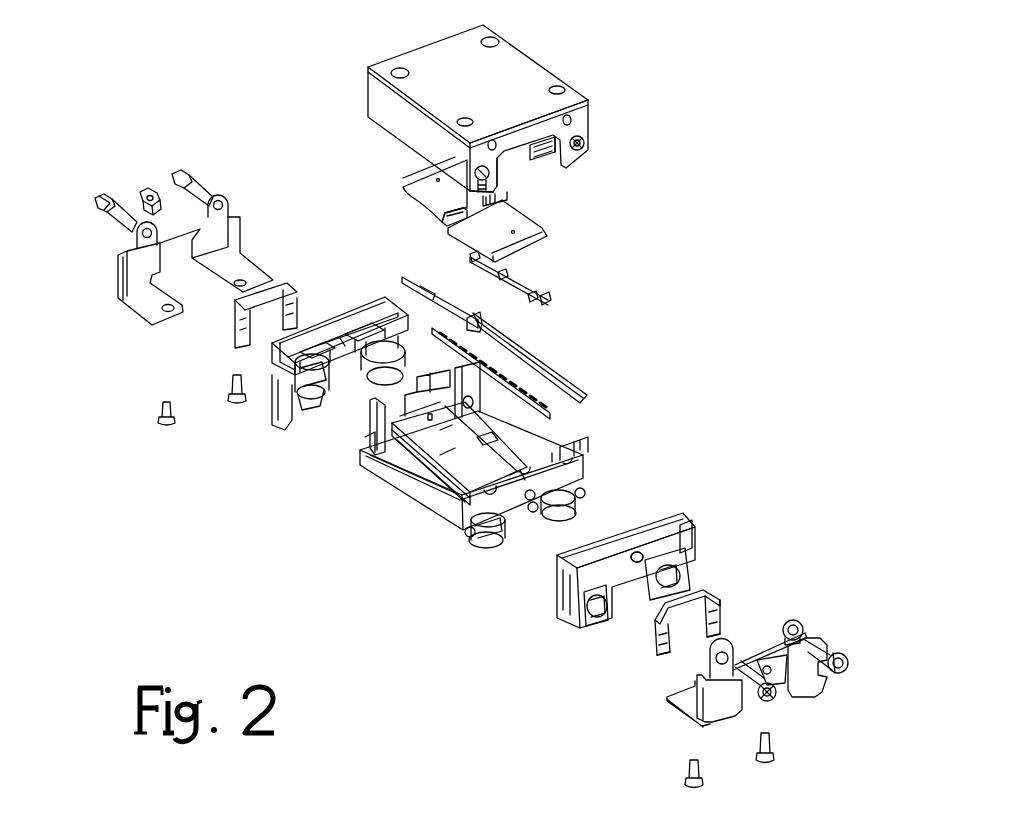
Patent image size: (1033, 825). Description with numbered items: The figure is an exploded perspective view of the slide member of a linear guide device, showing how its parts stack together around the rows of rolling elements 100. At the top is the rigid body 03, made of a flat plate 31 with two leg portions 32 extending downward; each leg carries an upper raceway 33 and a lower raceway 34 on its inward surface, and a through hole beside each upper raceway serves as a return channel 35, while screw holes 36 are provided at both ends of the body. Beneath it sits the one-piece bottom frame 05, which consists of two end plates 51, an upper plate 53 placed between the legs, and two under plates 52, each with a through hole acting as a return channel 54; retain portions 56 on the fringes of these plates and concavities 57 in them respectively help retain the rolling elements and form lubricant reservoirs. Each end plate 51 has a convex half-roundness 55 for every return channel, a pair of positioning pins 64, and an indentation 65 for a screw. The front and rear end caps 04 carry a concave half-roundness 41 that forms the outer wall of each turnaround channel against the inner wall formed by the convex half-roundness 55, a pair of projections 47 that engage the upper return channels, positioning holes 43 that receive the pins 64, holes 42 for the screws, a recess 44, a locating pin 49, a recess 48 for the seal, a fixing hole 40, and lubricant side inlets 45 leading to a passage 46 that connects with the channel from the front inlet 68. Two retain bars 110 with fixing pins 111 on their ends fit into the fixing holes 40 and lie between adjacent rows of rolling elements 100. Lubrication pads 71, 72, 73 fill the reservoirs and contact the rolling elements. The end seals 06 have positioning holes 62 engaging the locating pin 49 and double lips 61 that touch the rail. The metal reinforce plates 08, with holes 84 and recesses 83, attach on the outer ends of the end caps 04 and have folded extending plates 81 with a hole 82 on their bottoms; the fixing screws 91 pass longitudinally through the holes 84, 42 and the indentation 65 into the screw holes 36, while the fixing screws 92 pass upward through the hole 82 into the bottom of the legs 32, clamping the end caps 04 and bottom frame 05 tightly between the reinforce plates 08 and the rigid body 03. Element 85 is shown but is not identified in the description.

The rigid body 03 is at (499, 75).
The flat plate 31 is at (525, 128).
The leg portions 32 is at (492, 165).
The upper raceway 33 is at (550, 165).
The lower raceway 34 is at (553, 160).
The return channel 35 is at (584, 143).
The screw holes 36 is at (567, 113).
The lubrication pad 71 is at (440, 203).
The lubrication pad 72 is at (540, 307).
The lubrication pad 73 is at (533, 287).
The concave half-roundness 41 is at (387, 342).
The retain bars 110 is at (568, 387).
The fixing pin 111 is at (588, 397).
The end caps 04 is at (325, 323).
The passage 46 is at (309, 355).
The fixing hole 40 is at (369, 337).
The lubricant side inlets 45 is at (255, 405).
The projections 47 is at (270, 408).
The positioning holes 43 is at (293, 398).
The fixing screws 91 is at (113, 223).
The nut 85 is at (158, 268).
The extending plates 81 is at (143, 298).
The hole 82 is at (158, 317).
The rolling elements 100 is at (532, 508).
The bottom frame 05 is at (397, 510).
The end plates 51 is at (515, 473).
The retain portions 56 is at (368, 443).
The under plates 52 is at (387, 490).
The upper plate 53 is at (447, 460).
The concavities 57 is at (447, 437).
The convex half-roundness 55 is at (483, 548).
The positioning pins 64 is at (466, 540).
The return channel 54 is at (470, 537).
The indentation 65 is at (577, 455).
The holes 42 is at (645, 553).
The front inlet 68 is at (640, 556).
The recess 44 is at (697, 537).
The recess 48 is at (683, 572).
The locating pin 49 is at (604, 614).
The end seals 06 is at (713, 608).
The positioning holes 62 is at (657, 647).
The double lips 61 is at (660, 660).
The reinforce plates 08 is at (798, 677).
The recess 83 is at (803, 615).
The holes 84 is at (803, 632).
The fixing screws 92 is at (687, 772).